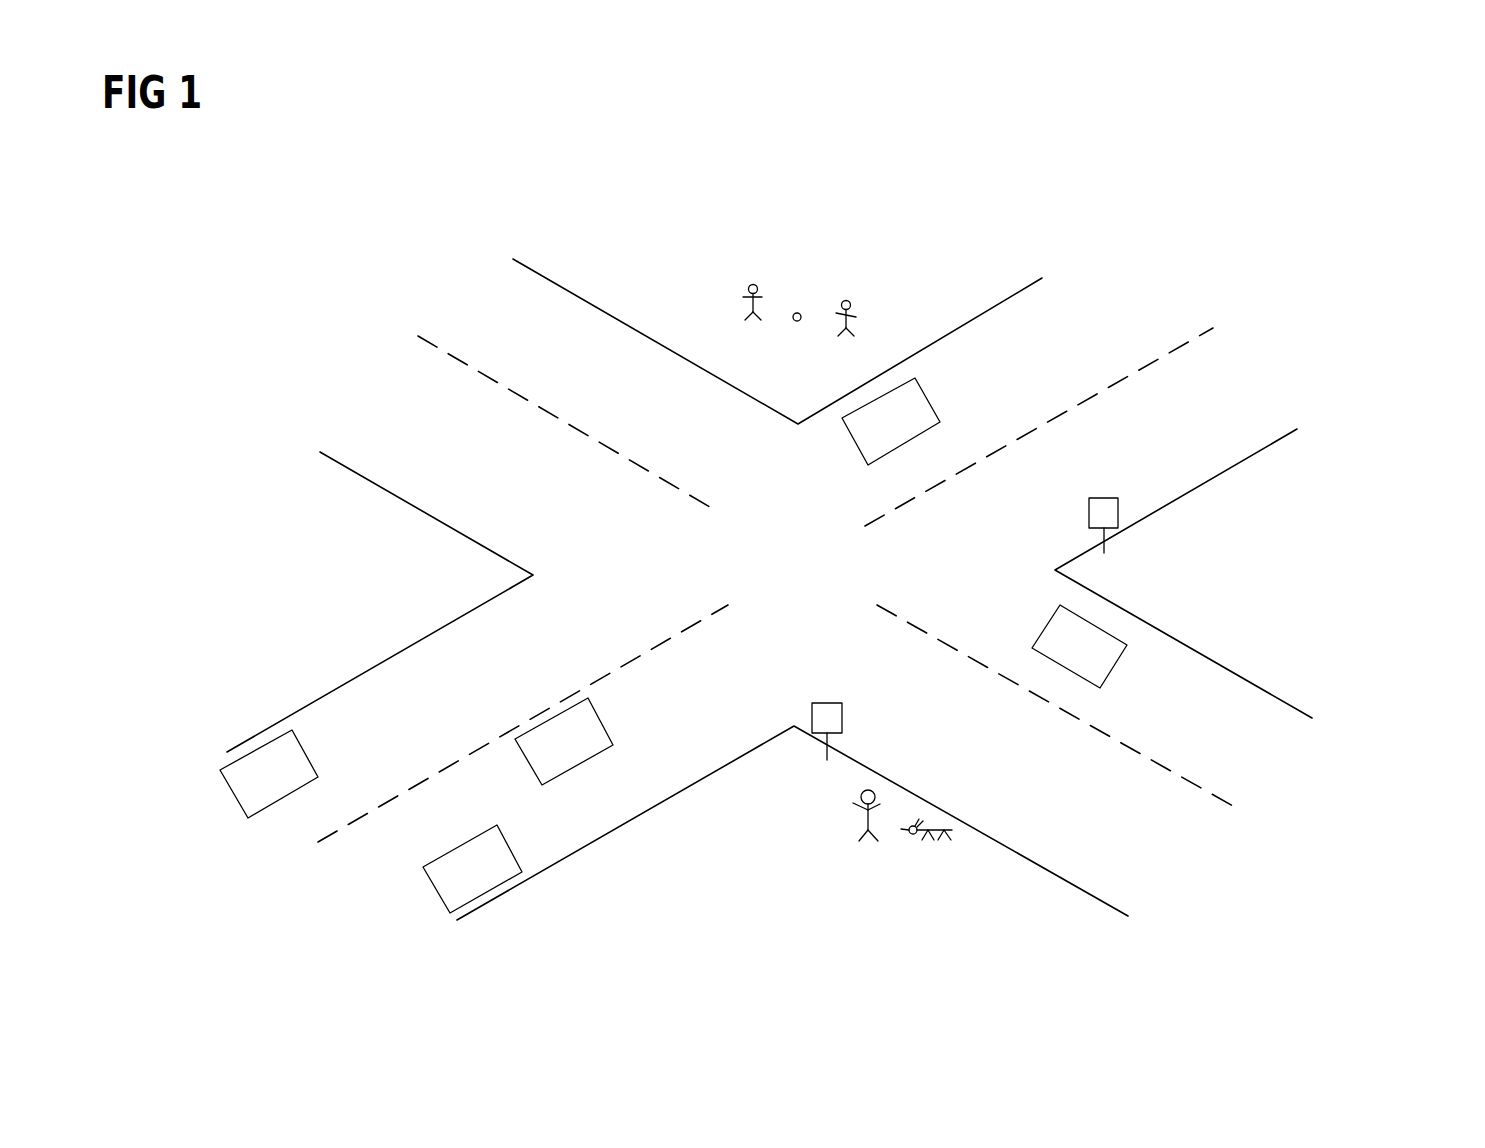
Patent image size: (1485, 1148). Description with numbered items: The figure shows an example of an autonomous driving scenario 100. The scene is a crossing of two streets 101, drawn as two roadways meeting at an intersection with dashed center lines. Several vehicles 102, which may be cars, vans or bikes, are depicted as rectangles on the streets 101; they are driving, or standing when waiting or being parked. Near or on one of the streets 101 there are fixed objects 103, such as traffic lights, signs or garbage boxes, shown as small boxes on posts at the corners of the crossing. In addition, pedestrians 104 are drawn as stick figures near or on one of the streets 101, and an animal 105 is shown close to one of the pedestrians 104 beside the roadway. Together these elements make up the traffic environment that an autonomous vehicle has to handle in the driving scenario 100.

The autonomous driving scenario 100 is at (1360, 145).
The streets 101 is at (1000, 300).
The vehicles 102 is at (927, 400).
The fixed objects 103 is at (833, 701).
The pedestrians 104 is at (750, 282).
The animals 105 is at (930, 843).